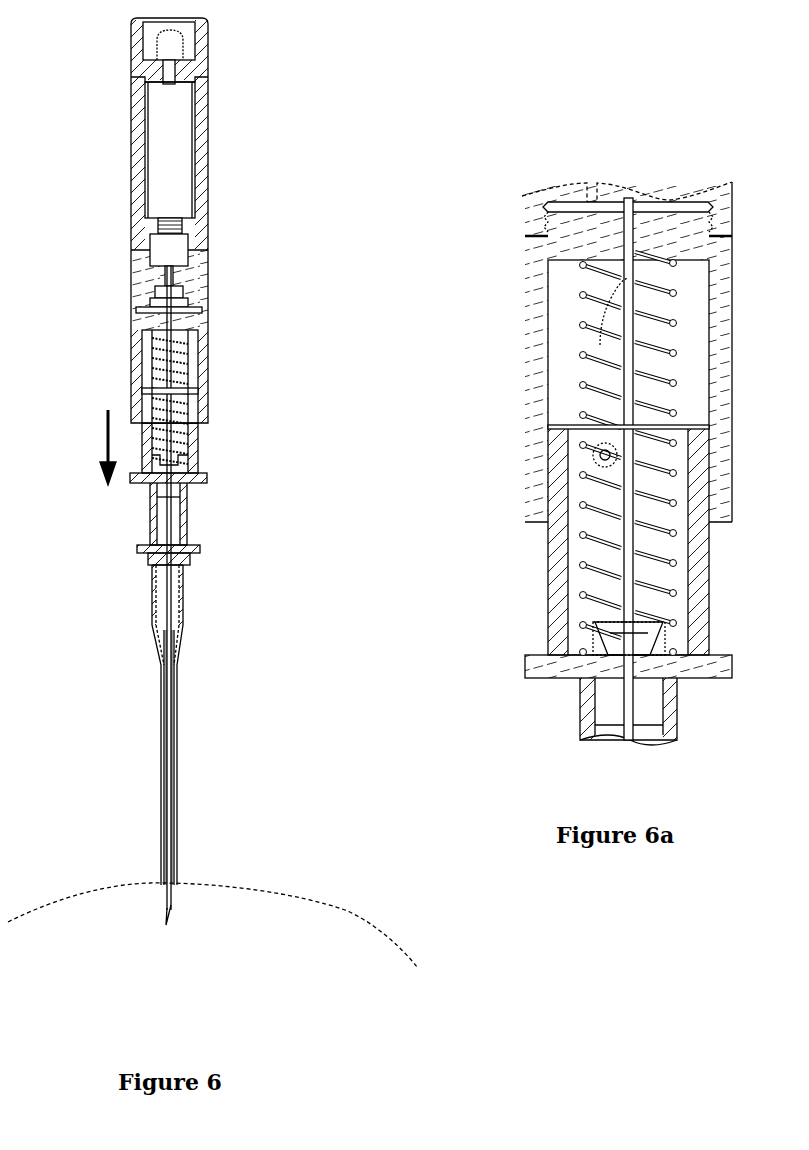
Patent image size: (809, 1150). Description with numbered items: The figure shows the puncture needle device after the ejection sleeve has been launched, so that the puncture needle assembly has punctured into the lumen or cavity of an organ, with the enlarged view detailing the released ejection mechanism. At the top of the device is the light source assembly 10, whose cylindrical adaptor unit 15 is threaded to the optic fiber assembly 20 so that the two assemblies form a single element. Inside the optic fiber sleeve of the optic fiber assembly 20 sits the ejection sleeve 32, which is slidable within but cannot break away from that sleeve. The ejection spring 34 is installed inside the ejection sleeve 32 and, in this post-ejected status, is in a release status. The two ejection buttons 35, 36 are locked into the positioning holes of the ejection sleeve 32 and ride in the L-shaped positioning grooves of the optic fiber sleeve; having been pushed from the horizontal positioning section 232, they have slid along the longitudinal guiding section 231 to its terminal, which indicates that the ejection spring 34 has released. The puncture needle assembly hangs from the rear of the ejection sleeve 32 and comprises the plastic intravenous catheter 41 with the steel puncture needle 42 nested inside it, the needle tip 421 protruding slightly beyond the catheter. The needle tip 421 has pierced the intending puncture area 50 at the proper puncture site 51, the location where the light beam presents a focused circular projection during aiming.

In FIG. 6, the light source assembly 10 is at (222, 152).
In FIG. 6, the adaptor unit 15 is at (222, 288).
In FIG. 6, the optic fiber assembly 20 is at (220, 400).
In FIG. 6, the ejection sleeve 32 is at (216, 440).
In FIG. 6A, the ejection sleeve 32 is at (628, 502).
In FIG. 6, the ejection spring 34 is at (150, 345).
In FIG. 6A, the ejection spring 34 is at (677, 383).
In FIG. 6, the longitudinal guiding section 231 is at (146, 376).
In FIG. 6A, the longitudinal guiding section 231 is at (548, 420).
In FIG. 6A, the horizontal positioning section 232 is at (675, 322).
In FIG. 6, the ejection button 35 is at (113, 401).
In FIG. 6A, the ejection button 35 is at (586, 540).
In FIG. 6, the ejection button 36 is at (143, 392).
In FIG. 6A, the ejection button 36 is at (600, 455).
In FIG. 6, the intravenous catheter 41 is at (180, 747).
In FIG. 6, the puncture needle 42 is at (165, 906).
In FIG. 6, the needle tip 421 is at (170, 914).
In FIG. 6, the proper puncture site 51 is at (176, 885).
In FIG. 6, the intending puncture area 50 is at (340, 920).